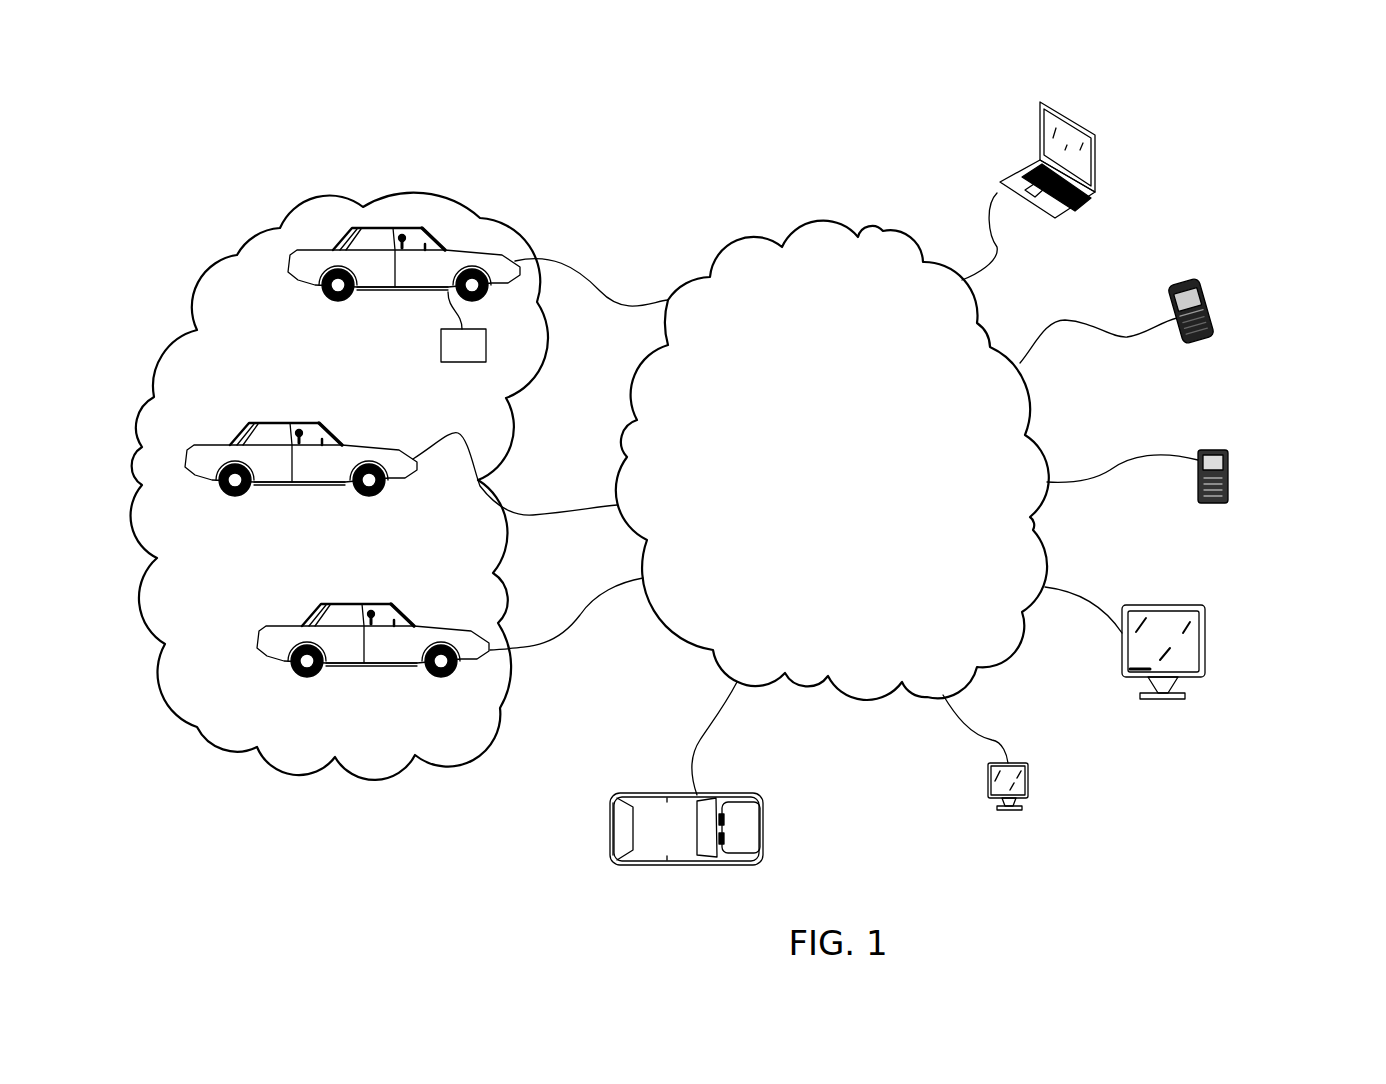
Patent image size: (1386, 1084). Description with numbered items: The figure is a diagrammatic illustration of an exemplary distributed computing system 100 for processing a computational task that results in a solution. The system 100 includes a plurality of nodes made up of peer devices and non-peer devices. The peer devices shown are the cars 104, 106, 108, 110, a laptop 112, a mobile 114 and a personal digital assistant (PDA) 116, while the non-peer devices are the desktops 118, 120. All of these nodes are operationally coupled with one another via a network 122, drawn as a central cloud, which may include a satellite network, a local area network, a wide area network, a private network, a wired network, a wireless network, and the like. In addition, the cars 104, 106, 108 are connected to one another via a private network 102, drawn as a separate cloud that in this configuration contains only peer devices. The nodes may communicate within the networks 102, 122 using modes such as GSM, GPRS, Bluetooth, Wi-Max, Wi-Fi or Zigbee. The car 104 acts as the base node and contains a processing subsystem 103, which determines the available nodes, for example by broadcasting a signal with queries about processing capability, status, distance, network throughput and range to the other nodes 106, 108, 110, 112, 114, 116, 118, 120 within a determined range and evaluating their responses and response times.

The system 100 is at (1258, 103).
The private network 102 is at (435, 195).
The processing subsystem 103 is at (462, 362).
The car 104 is at (408, 290).
The car 106 is at (289, 423).
The car 108 is at (355, 604).
The car 110 is at (752, 829).
The laptop 112 is at (1097, 150).
The mobile 114 is at (1218, 325).
The personal digital assistant (PDA) 116 is at (1230, 477).
The desktop 118 is at (1195, 653).
The desktop 120 is at (1030, 783).
The network 122 is at (824, 218).